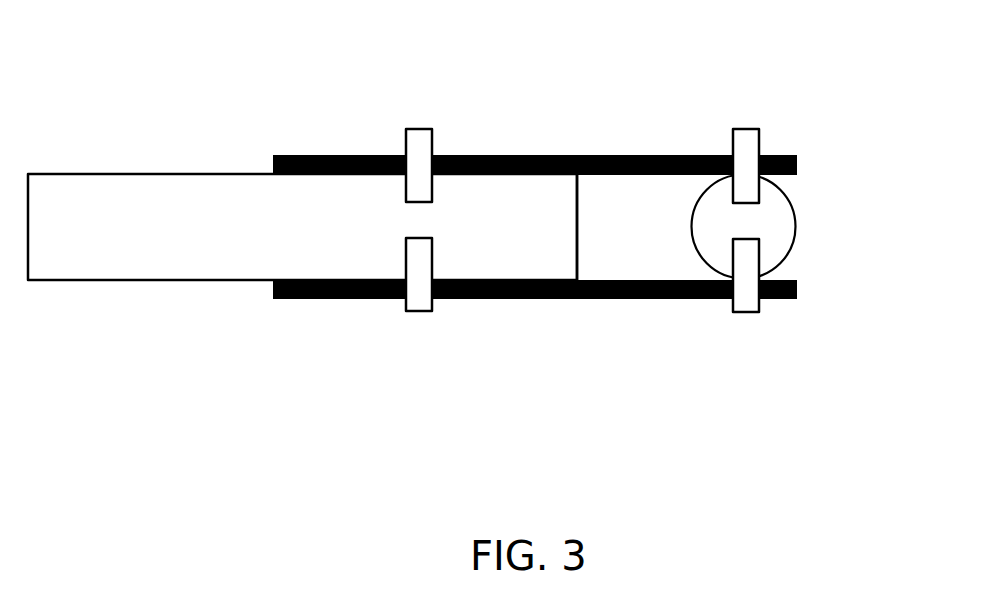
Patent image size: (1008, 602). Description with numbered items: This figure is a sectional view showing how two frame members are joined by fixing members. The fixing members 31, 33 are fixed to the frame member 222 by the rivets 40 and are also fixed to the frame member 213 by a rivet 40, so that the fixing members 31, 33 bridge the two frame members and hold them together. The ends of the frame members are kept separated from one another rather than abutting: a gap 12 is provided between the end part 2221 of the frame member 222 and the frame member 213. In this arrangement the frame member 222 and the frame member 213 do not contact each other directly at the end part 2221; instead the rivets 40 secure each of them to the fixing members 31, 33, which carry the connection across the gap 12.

The gap 12 is at (620, 194).
The fixing member 31 is at (533, 299).
The fixing member 33 is at (522, 156).
The rivet 40 is at (413, 128).
The frame member 213 is at (796, 210).
The frame member 222 is at (142, 174).
The end part 2221 is at (555, 244).